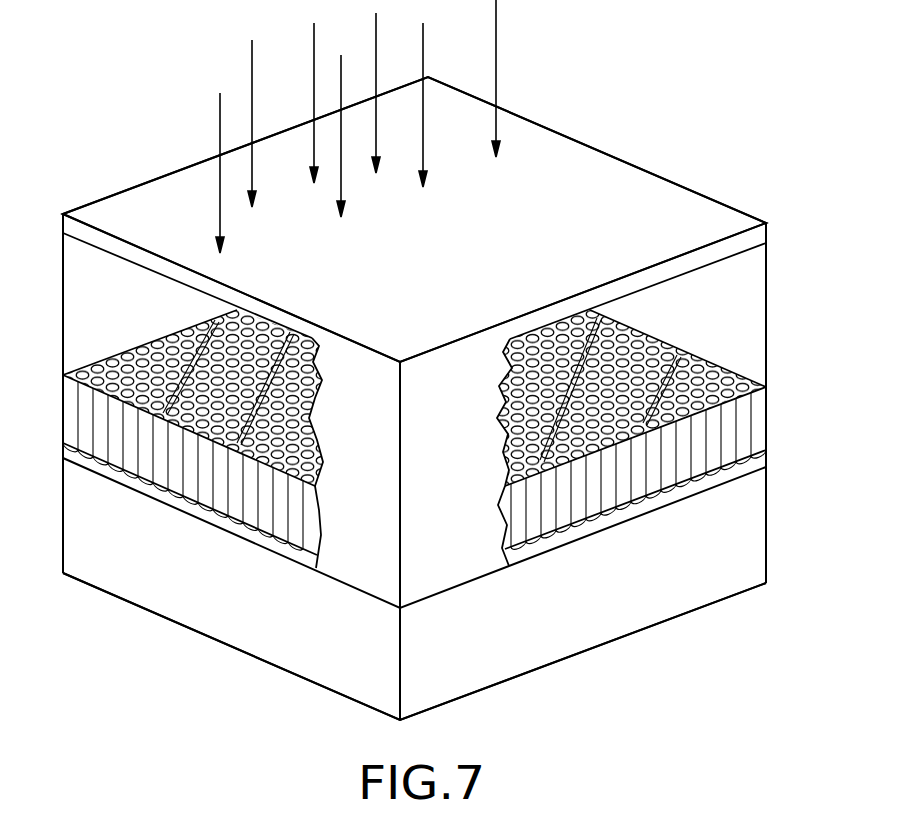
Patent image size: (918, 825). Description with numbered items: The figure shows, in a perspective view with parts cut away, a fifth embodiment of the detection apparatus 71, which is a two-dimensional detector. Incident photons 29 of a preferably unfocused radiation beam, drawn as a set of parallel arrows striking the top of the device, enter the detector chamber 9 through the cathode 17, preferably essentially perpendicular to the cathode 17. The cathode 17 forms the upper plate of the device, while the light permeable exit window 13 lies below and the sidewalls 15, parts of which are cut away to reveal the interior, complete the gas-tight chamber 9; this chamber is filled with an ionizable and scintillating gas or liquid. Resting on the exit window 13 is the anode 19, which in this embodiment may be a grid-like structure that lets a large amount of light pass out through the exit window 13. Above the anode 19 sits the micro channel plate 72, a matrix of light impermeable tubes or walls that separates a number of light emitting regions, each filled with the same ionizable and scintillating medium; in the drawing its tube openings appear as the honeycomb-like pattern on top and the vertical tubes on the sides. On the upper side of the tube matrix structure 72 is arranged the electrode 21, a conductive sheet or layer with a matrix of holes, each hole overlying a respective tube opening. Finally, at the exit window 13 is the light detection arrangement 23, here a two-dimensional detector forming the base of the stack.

The detection apparatus 71 is at (700, 145).
The incident photons 29 is at (497, 36).
The cathode 17 is at (737, 253).
The detector chamber 9 is at (741, 306).
The electrode 21 is at (737, 369).
The micro channel plate 72 is at (745, 412).
The anode 19 is at (762, 449).
The exit window 13 is at (760, 468).
The light detection arrangement 23 is at (752, 547).
The sidewalls 15 is at (450, 568).